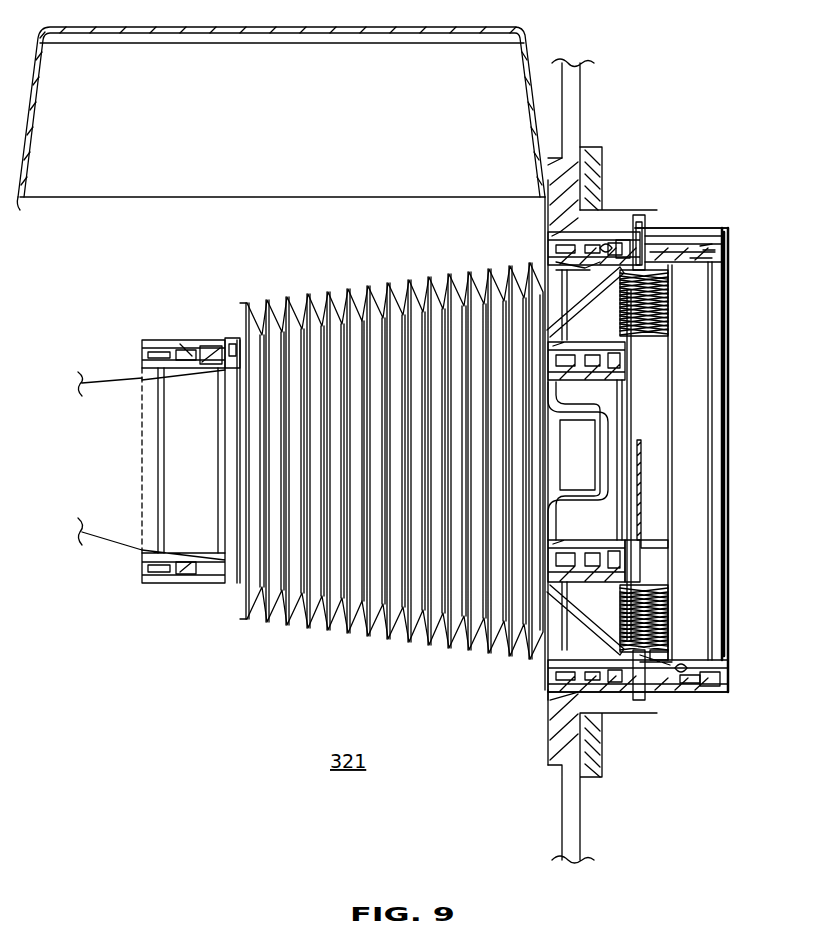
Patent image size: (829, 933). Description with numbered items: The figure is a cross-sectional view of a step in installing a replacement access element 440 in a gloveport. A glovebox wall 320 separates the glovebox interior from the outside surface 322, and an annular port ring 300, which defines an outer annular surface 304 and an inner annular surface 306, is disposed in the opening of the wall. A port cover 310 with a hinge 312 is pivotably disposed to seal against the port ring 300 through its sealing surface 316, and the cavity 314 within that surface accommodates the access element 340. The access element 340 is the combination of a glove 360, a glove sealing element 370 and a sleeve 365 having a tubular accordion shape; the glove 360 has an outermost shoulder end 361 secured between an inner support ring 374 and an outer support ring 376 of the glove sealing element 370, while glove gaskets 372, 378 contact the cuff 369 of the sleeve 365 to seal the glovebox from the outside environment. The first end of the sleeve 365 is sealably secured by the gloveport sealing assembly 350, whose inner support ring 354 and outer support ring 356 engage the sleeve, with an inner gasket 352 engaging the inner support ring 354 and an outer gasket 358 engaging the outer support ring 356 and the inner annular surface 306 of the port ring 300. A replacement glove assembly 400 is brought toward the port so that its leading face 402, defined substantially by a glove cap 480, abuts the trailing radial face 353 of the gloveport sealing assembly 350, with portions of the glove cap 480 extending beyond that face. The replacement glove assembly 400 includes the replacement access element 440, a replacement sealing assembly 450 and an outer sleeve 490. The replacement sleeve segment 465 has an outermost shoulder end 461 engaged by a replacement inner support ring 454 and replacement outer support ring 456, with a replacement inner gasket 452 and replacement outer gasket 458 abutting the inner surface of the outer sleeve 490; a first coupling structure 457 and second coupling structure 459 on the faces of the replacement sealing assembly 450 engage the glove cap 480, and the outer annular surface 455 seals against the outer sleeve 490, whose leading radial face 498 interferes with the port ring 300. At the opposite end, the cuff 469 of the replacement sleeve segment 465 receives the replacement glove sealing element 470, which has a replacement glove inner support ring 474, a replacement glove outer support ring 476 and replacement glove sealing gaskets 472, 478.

The annular port ring 300 is at (585, 200).
The outer annular surface 304 is at (672, 236).
The inner annular surface 306 is at (568, 705).
The port cover 310 is at (26, 155).
The hinge 312 is at (548, 190).
The cavity 314 is at (186, 182).
The sealing surface 316 is at (20, 197).
The glovebox wall 320 is at (585, 95).
The outside surface 322 is at (582, 68).
The access element 340 is at (228, 684).
The gloveport sealing assembly 350 is at (537, 703).
The inner gasket 352 is at (552, 247).
The trailing radial face 353 is at (712, 250).
The inner support ring 354 is at (546, 258).
The outer support ring 356 is at (615, 240).
The outer gasket 358 is at (632, 245).
The glove 360 is at (100, 540).
The outermost shoulder end 361 is at (197, 584).
The sleeve 365 is at (333, 630).
The second sleeve end 369 is at (158, 584).
The glove sealing element 370 is at (127, 338).
The glove gasket 372 is at (156, 352).
The inner support ring 374 is at (178, 350).
The outer support ring 376 is at (218, 345).
The glove gasket 378 is at (232, 340).
The replacement glove assembly 400 is at (746, 226).
The leading face 402 is at (533, 349).
The replacement access element 440 is at (663, 353).
The replacement sealing assembly 450 is at (708, 280).
The replacement inner gasket 452 is at (655, 700).
The replacement inner support ring 454 is at (668, 688).
The outer annular surface 455 is at (730, 240).
The replacement outer support ring 456 is at (700, 690).
The first coupling structure 457 is at (645, 700).
The replacement outer gasket 458 is at (718, 685).
The second coupling structure 459 is at (722, 688).
The outermost shoulder end 461 is at (690, 660).
The replacement sleeve segment 465 is at (660, 630).
The cuff 469 is at (575, 345).
The replacement glove sealing element 470 is at (620, 388).
The replacement glove sealing gasket 472 is at (560, 548).
The replacement glove inner support ring 474 is at (570, 585).
The replacement glove outer support ring 476 is at (610, 545).
The replacement glove sealing gasket 478 is at (668, 582).
The glove cap 480 is at (601, 414).
The outer sleeve 490 is at (683, 232).
The leading radial face 498 is at (650, 232).